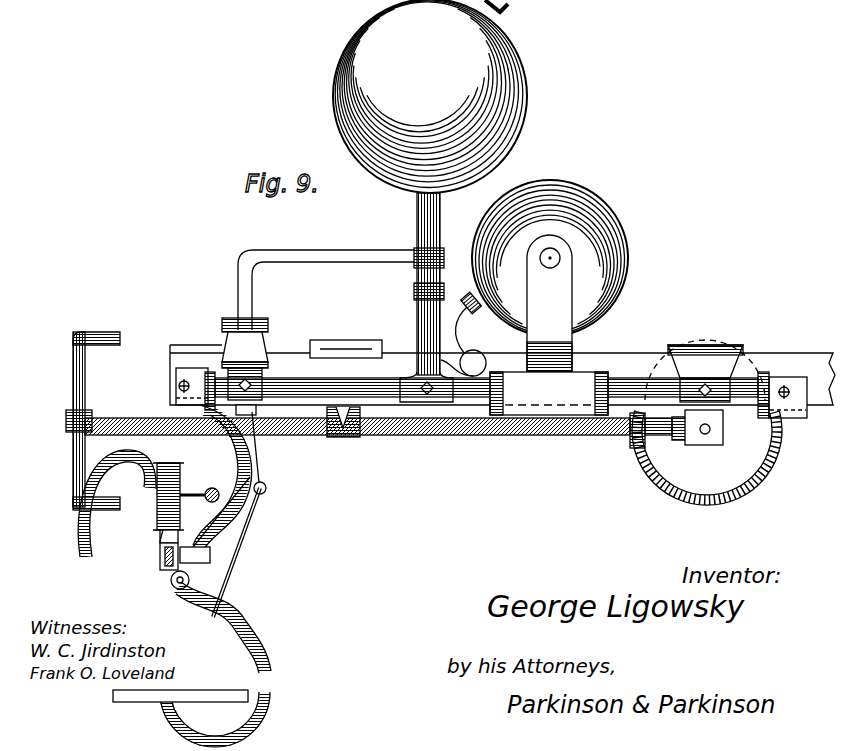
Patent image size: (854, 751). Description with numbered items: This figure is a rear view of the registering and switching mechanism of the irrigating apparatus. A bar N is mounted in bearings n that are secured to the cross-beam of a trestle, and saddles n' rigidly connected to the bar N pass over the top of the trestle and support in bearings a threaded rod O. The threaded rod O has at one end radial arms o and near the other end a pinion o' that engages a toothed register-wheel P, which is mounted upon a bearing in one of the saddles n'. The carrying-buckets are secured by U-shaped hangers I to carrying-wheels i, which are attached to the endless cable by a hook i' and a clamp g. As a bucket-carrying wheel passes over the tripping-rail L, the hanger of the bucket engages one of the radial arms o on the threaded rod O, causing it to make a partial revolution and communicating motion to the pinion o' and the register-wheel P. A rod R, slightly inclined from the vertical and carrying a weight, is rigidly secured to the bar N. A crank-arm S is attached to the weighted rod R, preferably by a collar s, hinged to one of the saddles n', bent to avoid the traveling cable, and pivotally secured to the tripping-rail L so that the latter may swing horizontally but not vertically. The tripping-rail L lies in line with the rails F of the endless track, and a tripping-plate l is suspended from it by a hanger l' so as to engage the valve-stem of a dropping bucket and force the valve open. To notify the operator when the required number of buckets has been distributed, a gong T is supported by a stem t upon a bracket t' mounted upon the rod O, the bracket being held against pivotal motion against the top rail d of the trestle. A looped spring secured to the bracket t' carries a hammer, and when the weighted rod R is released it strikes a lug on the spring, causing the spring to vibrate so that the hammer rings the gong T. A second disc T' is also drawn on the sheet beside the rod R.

The gong T is at (430, 96).
The second disc T' is at (550, 258).
The stem t is at (549, 303).
The bracket t' is at (549, 393).
The rod R is at (428, 297).
The collar s is at (436, 274).
The crank-arm S is at (326, 279).
The top rail d is at (226, 478).
The bearings n is at (493, 384).
The saddles n' is at (479, 365).
The bar N is at (486, 379).
The threaded rod O is at (404, 430).
The radial arms o is at (97, 420).
The pinion o' is at (630, 442).
The register-wheel P is at (707, 458).
The hangers I is at (105, 503).
The carrying-wheels i is at (172, 500).
The hook i' is at (195, 511).
The clamp g is at (200, 493).
The nut G is at (216, 484).
The tripping-rail L is at (160, 538).
The rails F is at (160, 562).
The hanger l' is at (195, 565).
The curved arm V is at (223, 627).
The tripping-plate l is at (191, 709).